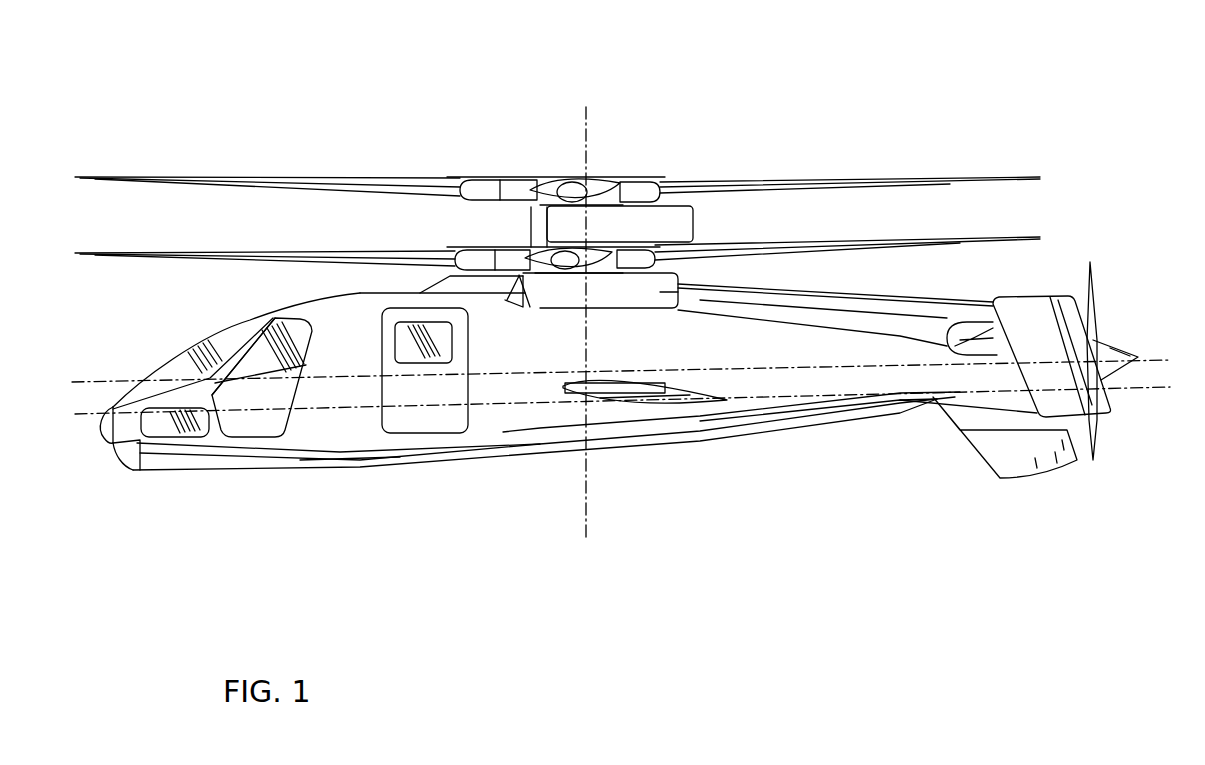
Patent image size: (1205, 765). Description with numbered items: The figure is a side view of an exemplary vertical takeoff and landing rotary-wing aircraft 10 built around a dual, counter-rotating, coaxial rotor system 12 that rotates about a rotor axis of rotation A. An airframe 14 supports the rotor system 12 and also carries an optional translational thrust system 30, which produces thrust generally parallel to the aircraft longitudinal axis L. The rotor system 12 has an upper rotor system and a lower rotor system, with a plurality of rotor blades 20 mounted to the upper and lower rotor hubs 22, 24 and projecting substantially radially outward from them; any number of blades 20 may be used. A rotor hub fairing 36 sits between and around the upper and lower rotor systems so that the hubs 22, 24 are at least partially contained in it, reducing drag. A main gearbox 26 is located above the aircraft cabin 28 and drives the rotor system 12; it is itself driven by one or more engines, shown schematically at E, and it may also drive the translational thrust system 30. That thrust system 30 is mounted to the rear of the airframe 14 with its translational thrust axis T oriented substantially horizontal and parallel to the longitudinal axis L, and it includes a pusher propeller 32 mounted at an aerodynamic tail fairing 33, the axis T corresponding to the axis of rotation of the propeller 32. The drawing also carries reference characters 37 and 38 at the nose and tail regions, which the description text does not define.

The rotary-wing aircraft 10 is at (745, 70).
The dual, counter-rotating, coaxial rotor system 12 is at (651, 150).
The airframe 14 is at (273, 313).
The rotor blades 20 is at (878, 242).
The upper rotor hub 22 is at (535, 175).
The lower rotor hub 24 is at (518, 242).
The main gearbox 26 is at (560, 292).
The aircraft cabin 28 is at (343, 443).
The translational thrust system 30 is at (1093, 262).
The pusher propeller 32 is at (1098, 425).
The aerodynamic tail fairing 33 is at (990, 450).
The rotor hub fairing 36 is at (692, 217).
The nose section 37 is at (140, 440).
The extending tail 38 is at (907, 380).
The rotor axis of rotation A is at (589, 338).
The translational thrust axis T is at (613, 376).
The aircraft longitudinal axis L is at (613, 406).
The engines E is at (667, 292).